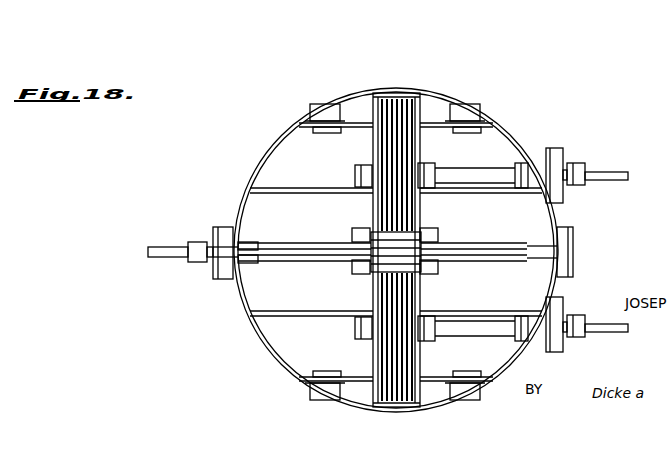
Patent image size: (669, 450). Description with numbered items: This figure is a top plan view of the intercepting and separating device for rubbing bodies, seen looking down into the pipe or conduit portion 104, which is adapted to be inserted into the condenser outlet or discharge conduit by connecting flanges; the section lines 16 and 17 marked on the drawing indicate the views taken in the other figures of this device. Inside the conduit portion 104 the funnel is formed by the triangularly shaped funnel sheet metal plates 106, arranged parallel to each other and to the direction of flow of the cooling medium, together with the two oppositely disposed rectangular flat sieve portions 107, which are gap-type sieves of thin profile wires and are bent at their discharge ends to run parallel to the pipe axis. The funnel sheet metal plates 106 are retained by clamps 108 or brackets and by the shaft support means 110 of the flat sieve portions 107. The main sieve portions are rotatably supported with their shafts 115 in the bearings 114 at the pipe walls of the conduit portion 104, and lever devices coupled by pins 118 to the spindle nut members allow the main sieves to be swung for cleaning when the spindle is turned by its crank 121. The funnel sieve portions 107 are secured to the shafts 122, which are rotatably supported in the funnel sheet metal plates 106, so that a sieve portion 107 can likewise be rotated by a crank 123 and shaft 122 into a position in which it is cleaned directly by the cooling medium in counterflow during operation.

The pipe or conduit portion 104 is at (255, 336).
The funnel sheet metal plates 106 is at (373, 150).
The rectangular flat sieve portions 107 is at (395, 141).
The clamps 108 is at (400, 93).
The shaft support means 110 is at (355, 170).
The bearings 114 is at (328, 113).
The shafts 115 is at (320, 134).
The pins 118 is at (358, 230).
The crank 121 is at (190, 262).
The shafts 122 is at (493, 172).
The crank 123 is at (585, 170).
The section line 16 is at (135, 247).
The section line 17 is at (410, 24).